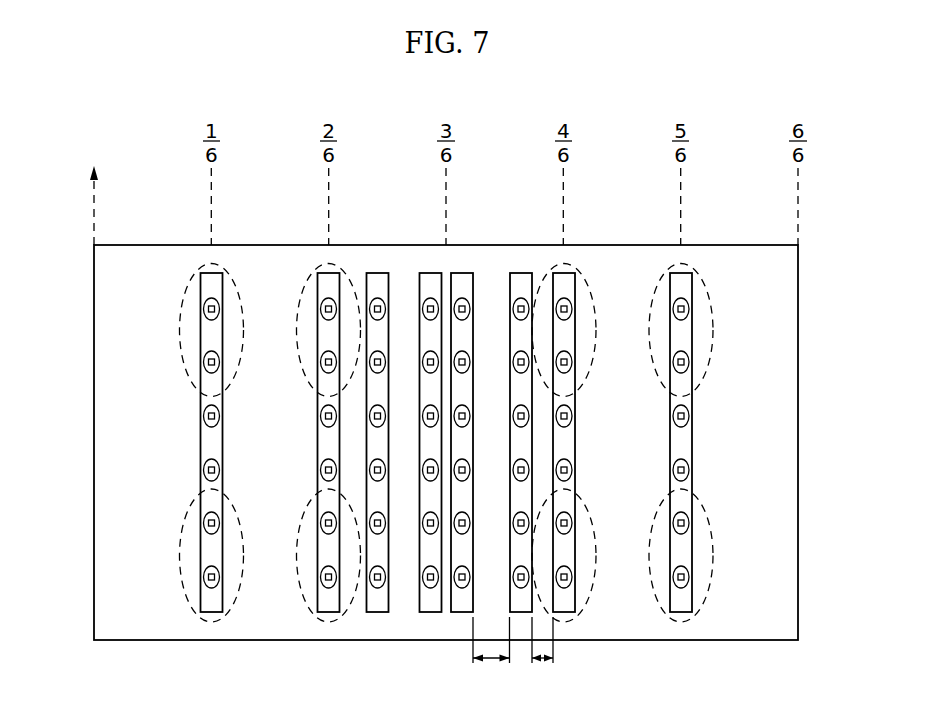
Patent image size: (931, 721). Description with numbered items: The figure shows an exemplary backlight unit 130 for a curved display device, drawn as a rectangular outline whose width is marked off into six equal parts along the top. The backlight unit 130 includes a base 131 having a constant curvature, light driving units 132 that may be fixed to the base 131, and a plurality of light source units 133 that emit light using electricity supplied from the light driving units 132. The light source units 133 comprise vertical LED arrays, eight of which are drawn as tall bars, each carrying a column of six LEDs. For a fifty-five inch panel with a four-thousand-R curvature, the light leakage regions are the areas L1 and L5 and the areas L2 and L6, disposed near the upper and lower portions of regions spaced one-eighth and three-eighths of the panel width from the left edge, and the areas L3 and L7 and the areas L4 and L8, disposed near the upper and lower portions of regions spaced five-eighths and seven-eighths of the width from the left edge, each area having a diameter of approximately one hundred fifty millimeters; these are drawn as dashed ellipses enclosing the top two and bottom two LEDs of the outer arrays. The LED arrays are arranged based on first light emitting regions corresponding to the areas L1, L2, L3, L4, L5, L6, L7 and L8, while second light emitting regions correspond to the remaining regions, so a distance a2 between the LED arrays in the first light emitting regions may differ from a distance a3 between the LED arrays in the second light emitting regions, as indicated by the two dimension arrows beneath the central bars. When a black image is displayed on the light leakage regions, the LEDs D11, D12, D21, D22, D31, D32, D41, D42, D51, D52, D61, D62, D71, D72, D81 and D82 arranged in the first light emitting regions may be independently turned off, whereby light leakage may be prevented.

The backlight unit 130 is at (735, 198).
The base 131 is at (613, 627).
The light driving unit 132 is at (430, 608).
The light source unit 133 is at (421, 590).
The light leakage area L1 is at (185, 293).
The light leakage area L2 is at (192, 503).
The light leakage area L3 is at (708, 293).
The light leakage area L4 is at (701, 503).
The light leakage area L5 is at (311, 275).
The light leakage area L6 is at (309, 503).
The light leakage area L7 is at (583, 275).
The light leakage area L8 is at (583, 503).
The LED D11 is at (203, 309).
The LED D12 is at (203, 362).
The LED D21 is at (203, 523).
The LED D22 is at (203, 577).
The LED D31 is at (690, 309).
The LED D32 is at (690, 362).
The LED D41 is at (690, 523).
The LED D42 is at (690, 577).
The LED D51 is at (320, 309).
The LED D52 is at (320, 362).
The LED D61 is at (320, 523).
The LED D62 is at (320, 577).
The LED D71 is at (572, 309).
The LED D72 is at (572, 362).
The LED D81 is at (572, 523).
The LED D82 is at (572, 577).
The distance between LED arrays in first light emitting regions a2 is at (542, 653).
The distance between LED arrays in second light emitting regions a3 is at (491, 653).